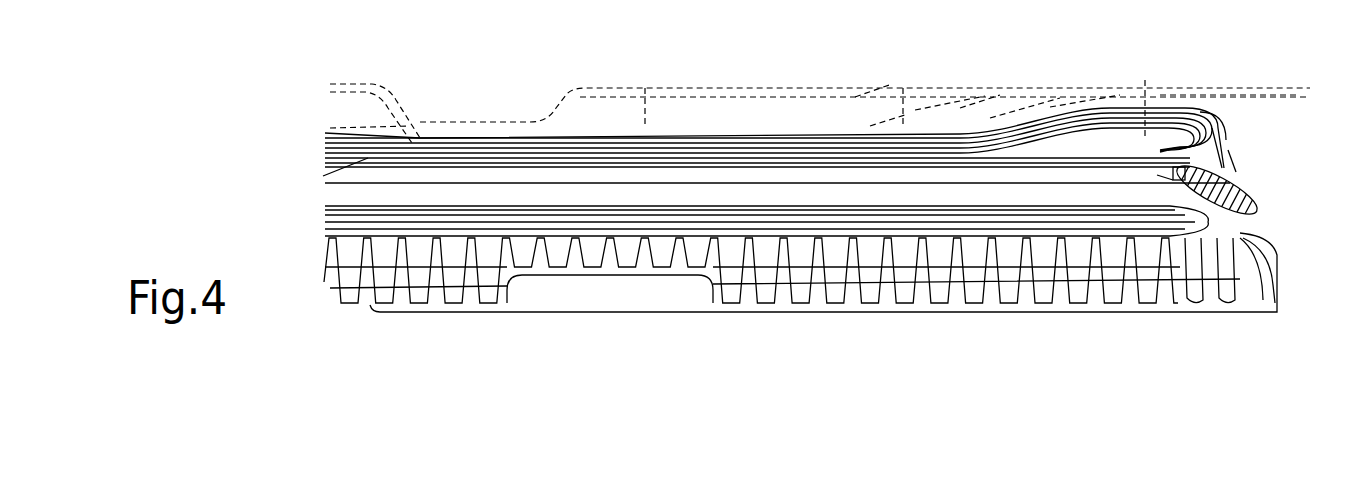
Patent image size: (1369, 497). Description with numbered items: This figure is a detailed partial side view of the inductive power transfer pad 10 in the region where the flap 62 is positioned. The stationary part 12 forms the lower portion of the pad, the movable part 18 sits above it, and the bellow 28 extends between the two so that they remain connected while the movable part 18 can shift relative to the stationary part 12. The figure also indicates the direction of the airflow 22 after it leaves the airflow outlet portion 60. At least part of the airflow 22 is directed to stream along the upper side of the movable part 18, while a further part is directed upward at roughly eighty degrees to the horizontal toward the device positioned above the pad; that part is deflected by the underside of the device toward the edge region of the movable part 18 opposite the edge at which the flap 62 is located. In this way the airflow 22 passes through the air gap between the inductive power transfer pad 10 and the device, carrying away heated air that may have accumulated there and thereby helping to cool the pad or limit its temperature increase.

The inductive power transfer pad 10 is at (310, 158).
The stationary part 12 is at (1240, 279).
The movable part 18 is at (1255, 200).
The airflow 22 is at (842, 145).
The bellow 28 is at (1208, 224).
The airflow outlet portion 60 is at (1226, 142).
The flap 62 is at (1251, 172).